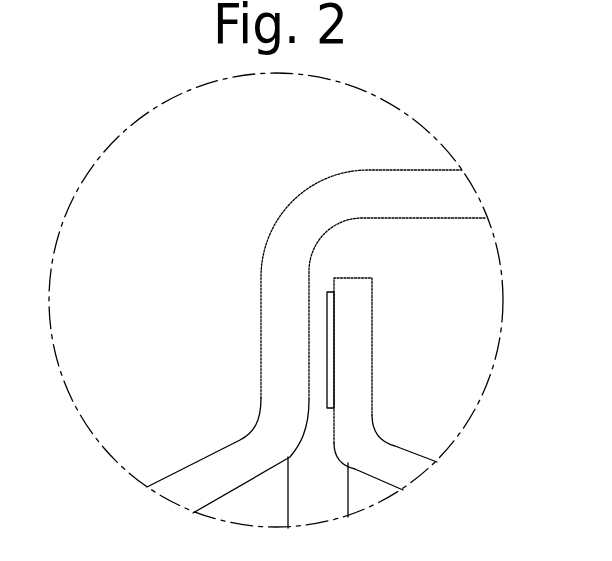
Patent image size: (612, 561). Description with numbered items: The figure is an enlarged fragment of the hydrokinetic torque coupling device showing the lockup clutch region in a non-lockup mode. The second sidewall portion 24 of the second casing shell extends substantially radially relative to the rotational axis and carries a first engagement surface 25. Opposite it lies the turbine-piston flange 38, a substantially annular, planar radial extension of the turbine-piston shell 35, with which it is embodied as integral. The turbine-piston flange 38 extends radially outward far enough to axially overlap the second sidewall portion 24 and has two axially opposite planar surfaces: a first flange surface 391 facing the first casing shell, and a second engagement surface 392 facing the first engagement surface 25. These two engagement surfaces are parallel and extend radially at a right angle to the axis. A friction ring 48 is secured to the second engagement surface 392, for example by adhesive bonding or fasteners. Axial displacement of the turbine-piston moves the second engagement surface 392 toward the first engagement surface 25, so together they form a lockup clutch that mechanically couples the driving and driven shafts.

The second sidewall portion 24 is at (277, 344).
The first engagement surface 25 is at (311, 375).
The turbine-piston shell 35 is at (398, 466).
The turbine-piston flange 38 is at (352, 340).
The first flange surface 391 is at (372, 376).
The second engagement surface 392 is at (327, 303).
The friction ring 48 is at (330, 318).